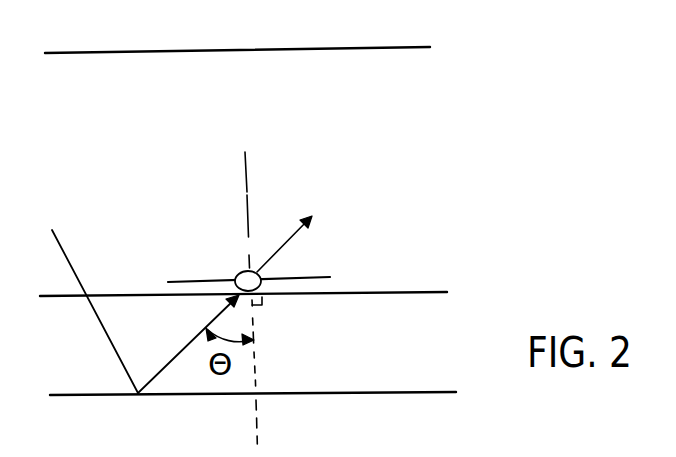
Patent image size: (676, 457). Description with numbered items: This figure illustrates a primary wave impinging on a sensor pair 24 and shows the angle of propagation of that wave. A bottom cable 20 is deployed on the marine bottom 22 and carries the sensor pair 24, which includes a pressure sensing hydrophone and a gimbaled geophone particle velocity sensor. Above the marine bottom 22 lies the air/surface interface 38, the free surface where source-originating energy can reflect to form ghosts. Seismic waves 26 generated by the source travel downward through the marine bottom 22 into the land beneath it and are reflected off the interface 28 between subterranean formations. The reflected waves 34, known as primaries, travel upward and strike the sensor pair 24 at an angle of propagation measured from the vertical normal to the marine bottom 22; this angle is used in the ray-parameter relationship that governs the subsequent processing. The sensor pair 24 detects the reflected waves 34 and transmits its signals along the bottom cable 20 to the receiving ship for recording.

The air/surface interface 38 is at (320, 48).
The seismic waves 26 is at (67, 255).
The reflected waves 34 is at (187, 340).
The bottom cable 20 is at (322, 277).
The sensor pair 24 is at (262, 290).
The marine bottom 22 is at (430, 292).
The interface 28 is at (363, 386).